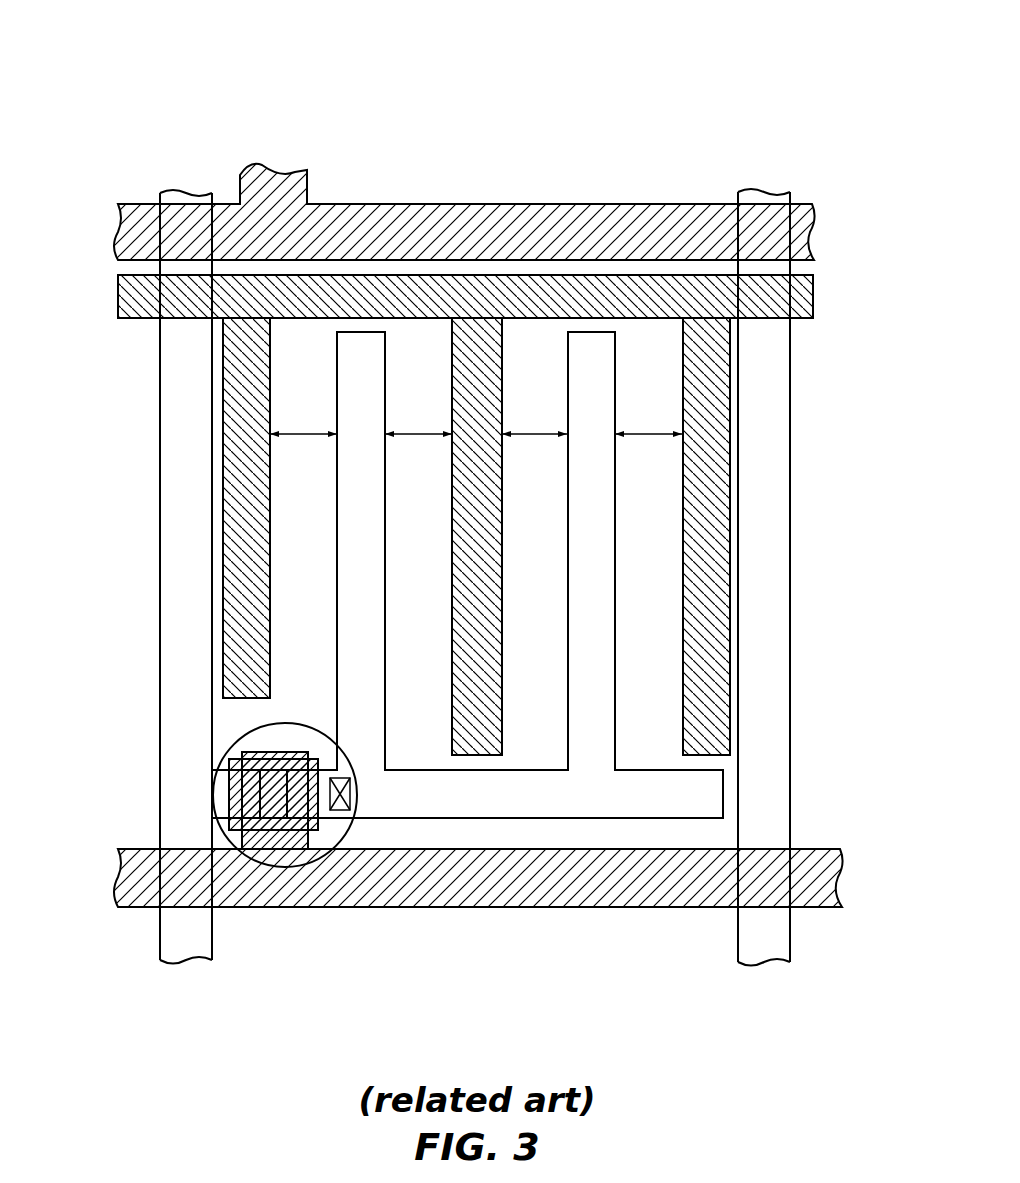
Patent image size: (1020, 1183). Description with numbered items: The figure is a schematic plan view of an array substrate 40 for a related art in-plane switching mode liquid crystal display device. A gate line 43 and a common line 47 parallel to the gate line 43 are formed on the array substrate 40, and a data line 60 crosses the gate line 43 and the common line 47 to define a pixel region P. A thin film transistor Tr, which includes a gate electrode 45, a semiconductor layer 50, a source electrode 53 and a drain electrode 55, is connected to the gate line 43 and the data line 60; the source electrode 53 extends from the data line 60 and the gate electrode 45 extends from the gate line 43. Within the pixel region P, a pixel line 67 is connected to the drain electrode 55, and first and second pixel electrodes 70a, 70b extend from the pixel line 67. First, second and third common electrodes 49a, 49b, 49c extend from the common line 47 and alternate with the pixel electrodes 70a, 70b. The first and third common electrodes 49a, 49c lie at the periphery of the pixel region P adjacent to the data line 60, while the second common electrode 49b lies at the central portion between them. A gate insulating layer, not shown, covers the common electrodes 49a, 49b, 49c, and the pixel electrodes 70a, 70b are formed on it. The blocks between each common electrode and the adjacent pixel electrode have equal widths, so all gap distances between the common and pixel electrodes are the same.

The array substrate 40 is at (473, 513).
The gate line 43 is at (640, 897).
The gate electrode 45 is at (248, 860).
The common line 47 is at (800, 300).
The first common electrode 49a is at (237, 381).
The second common electrode 49b is at (482, 757).
The third common electrode 49c is at (718, 693).
The semiconductor layer 50 is at (316, 826).
The source electrode 53 is at (222, 797).
The drain electrode 55 is at (326, 778).
The data line 60 is at (178, 440).
The pixel line 67 is at (467, 580).
The first pixel electrode 70a is at (366, 343).
The second pixel electrode 70b is at (588, 347).
The pixel region P is at (469, 551).
The thin film transistor Tr is at (261, 817).